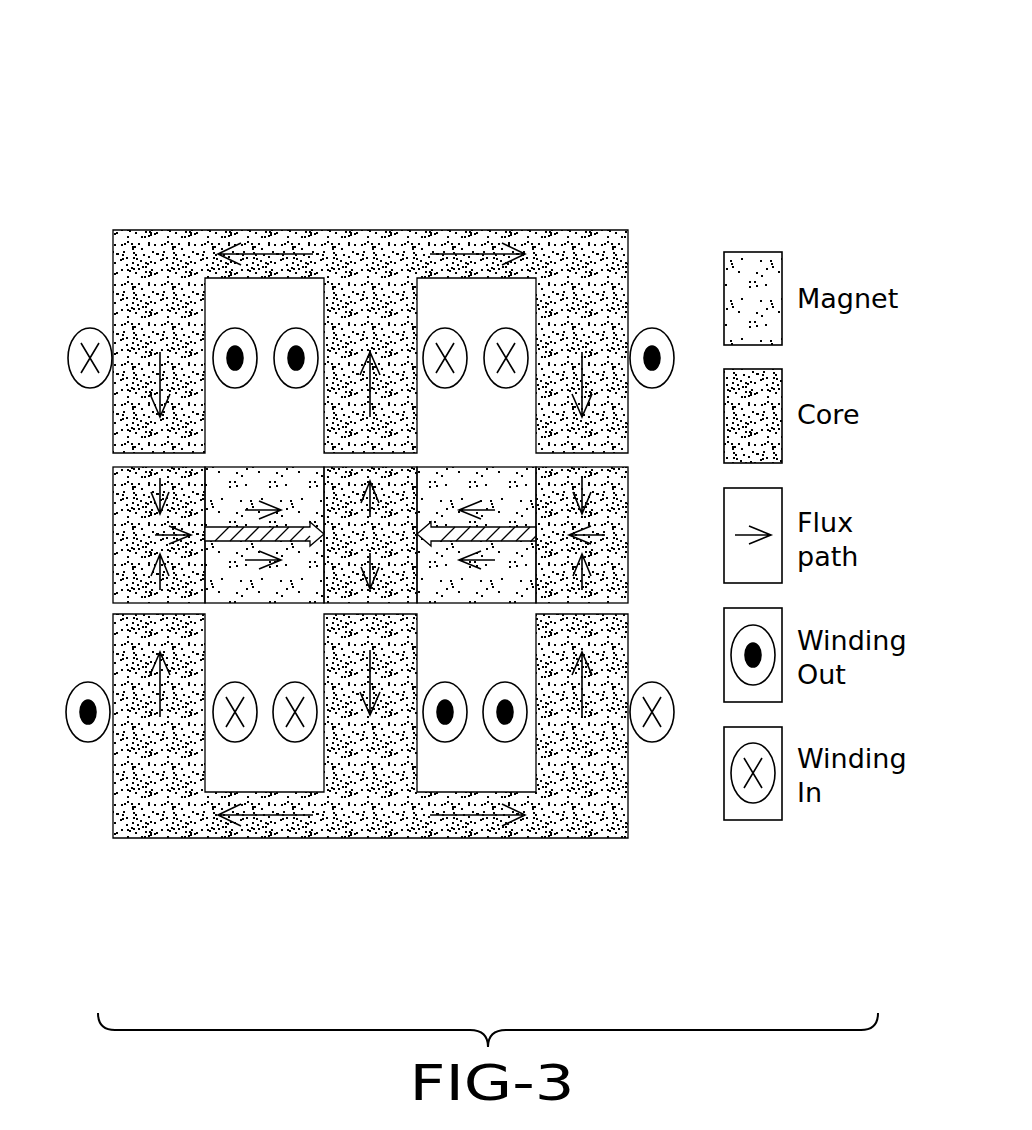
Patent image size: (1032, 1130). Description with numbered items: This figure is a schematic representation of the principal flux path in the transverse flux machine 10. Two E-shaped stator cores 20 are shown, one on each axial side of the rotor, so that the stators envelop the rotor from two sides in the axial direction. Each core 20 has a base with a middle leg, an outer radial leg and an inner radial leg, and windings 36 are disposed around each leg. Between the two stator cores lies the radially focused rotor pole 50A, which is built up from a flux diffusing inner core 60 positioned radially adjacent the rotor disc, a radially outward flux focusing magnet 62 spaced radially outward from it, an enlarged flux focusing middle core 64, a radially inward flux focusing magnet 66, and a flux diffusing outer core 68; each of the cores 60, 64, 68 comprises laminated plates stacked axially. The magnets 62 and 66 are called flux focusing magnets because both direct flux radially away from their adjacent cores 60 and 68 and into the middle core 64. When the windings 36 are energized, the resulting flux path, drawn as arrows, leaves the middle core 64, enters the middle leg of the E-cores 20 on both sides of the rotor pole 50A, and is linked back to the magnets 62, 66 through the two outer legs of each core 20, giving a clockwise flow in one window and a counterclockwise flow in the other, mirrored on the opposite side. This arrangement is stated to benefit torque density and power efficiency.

The transverse flux machine 10 is at (558, 115).
The E-shaped core 20 is at (130, 230).
The windings 36 is at (70, 340).
The radially focused rotor pole 50A is at (374, 537).
The flux diffusing inner core 60 is at (617, 557).
The radially outward flux focusing magnet 62 is at (492, 488).
The flux focusing middle core 64 is at (395, 555).
The radially inward flux focusing magnet 66 is at (288, 488).
The flux diffusing outer core 68 is at (135, 548).